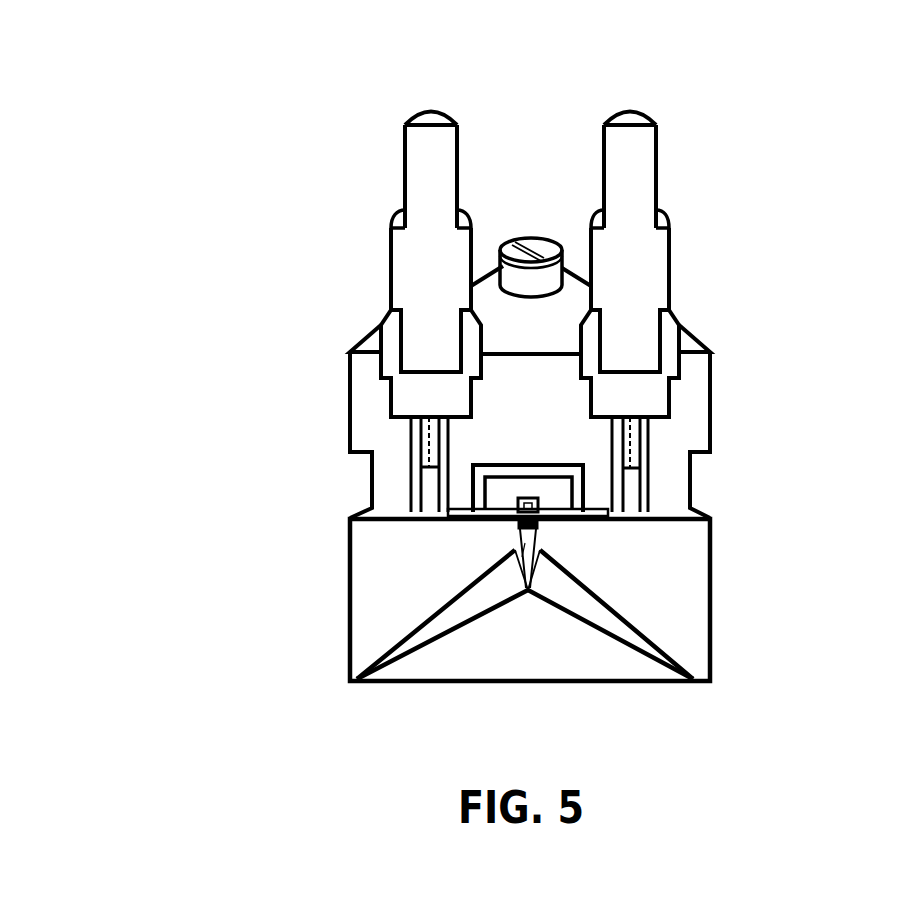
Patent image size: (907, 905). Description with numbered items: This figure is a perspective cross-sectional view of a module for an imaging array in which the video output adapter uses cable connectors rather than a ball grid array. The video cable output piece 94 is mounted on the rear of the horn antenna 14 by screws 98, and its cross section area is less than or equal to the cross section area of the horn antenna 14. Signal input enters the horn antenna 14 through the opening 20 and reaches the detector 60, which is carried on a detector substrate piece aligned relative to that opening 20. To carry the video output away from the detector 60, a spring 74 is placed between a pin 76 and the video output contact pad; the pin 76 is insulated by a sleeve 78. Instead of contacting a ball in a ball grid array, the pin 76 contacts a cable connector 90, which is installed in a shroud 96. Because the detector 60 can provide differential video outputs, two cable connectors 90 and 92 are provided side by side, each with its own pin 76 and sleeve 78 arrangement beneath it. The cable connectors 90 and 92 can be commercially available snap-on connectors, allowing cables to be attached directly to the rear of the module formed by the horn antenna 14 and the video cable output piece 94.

The horn antenna 14 is at (692, 618).
The opening 20 is at (515, 555).
The detector 60 is at (513, 521).
The spring 74 is at (630, 505).
The pin 76 is at (630, 447).
The sleeve 78 is at (417, 445).
The cable connector 90 is at (633, 198).
The cable connector 92 is at (430, 178).
The video cable output piece 94 is at (370, 372).
The shroud 96 is at (650, 387).
The screws 98 is at (542, 282).